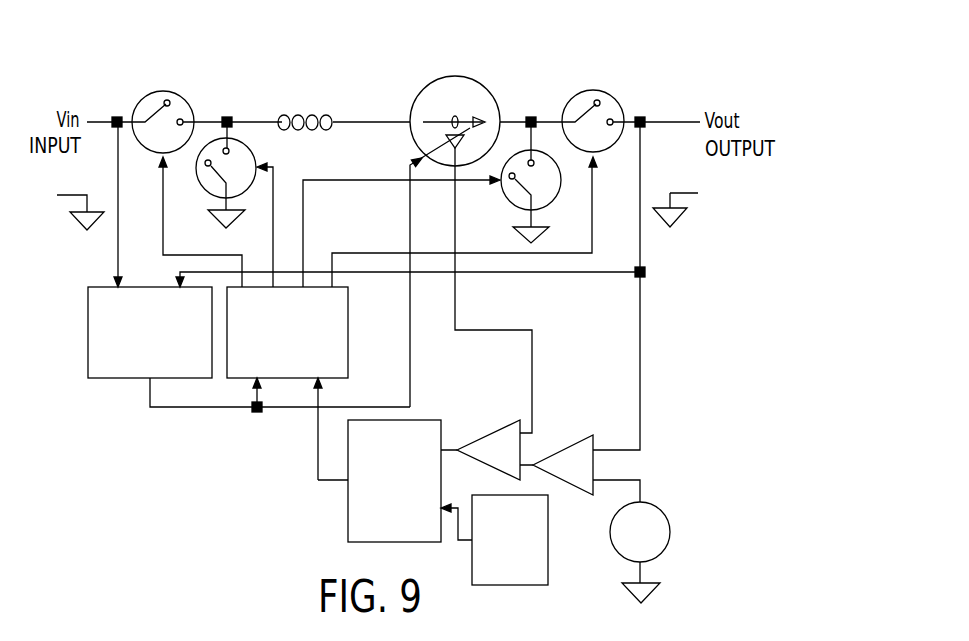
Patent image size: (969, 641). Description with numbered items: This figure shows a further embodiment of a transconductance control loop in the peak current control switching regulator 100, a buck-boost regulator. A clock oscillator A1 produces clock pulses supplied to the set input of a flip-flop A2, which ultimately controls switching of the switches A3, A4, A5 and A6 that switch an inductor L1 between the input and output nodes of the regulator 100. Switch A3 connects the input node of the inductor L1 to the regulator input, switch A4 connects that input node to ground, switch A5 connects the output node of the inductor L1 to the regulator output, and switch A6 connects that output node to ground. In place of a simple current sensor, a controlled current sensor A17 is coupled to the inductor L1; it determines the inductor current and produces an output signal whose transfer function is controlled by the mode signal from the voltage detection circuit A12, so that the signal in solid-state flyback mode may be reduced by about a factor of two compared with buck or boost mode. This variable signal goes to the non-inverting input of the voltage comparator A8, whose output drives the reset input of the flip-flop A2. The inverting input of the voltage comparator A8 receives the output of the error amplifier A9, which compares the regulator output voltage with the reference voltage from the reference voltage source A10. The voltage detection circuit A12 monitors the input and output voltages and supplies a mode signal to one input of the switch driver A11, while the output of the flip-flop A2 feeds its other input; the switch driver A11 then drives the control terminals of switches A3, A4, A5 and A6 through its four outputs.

The peak current control switching regulator 100 is at (597, 60).
The clock oscillator A1 is at (510, 540).
The flip-flop A2 is at (394, 481).
The switch A3 is at (163, 122).
The switch A4 is at (226, 183).
The switch A5 is at (531, 196).
The switch A6 is at (593, 121).
The voltage comparator A8 is at (488, 450).
The error amplifier A9 is at (563, 465).
The reference voltage source A10 is at (640, 552).
The switch driver A11 is at (287, 332).
The voltage detection circuit A12 is at (150, 332).
The controlled current sensor A17 is at (455, 121).
The inductor L1 is at (308, 108).